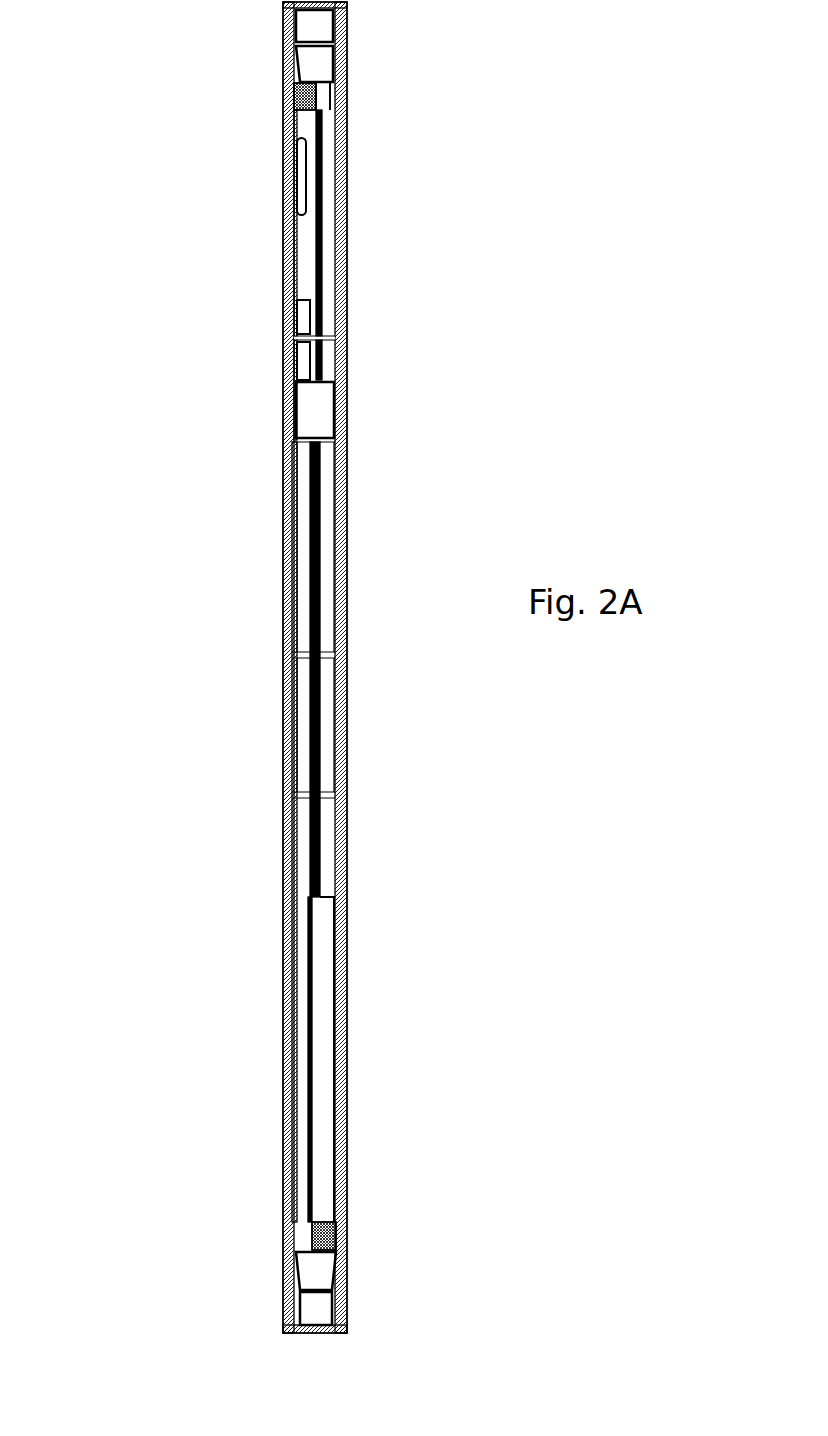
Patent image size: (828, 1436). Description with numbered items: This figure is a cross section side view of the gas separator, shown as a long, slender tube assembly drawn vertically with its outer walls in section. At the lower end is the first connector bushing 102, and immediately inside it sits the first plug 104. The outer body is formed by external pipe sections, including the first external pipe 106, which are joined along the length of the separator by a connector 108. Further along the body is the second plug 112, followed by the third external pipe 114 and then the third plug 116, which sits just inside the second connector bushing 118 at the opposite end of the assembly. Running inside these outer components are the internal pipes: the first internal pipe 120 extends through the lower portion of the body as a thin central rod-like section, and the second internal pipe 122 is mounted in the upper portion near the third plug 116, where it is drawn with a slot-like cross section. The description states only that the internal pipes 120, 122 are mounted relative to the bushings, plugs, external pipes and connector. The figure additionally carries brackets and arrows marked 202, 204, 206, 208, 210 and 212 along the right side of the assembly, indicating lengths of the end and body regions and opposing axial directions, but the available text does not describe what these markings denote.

The first connector bushing 102 is at (280, 1277).
The first plug 104 is at (280, 1250).
The first external pipe 106 is at (258, 972).
The connector 108 is at (262, 727).
The second plug 112 is at (258, 570).
The third external pipe 114 is at (258, 408).
The third plug 116 is at (282, 97).
The second connector bushing 118 is at (268, 35).
The first internal pipe 120 is at (302, 1178).
The second internal pipe 122 is at (328, 248).
The bottom cap region 202 is at (355, 1253).
The main body region 204 is at (354, 440).
The upper region 206 is at (350, 110).
The top cap region 208 is at (356, 12).
The upward direction 210 is at (340, 160).
The downward direction 212 is at (340, 190).